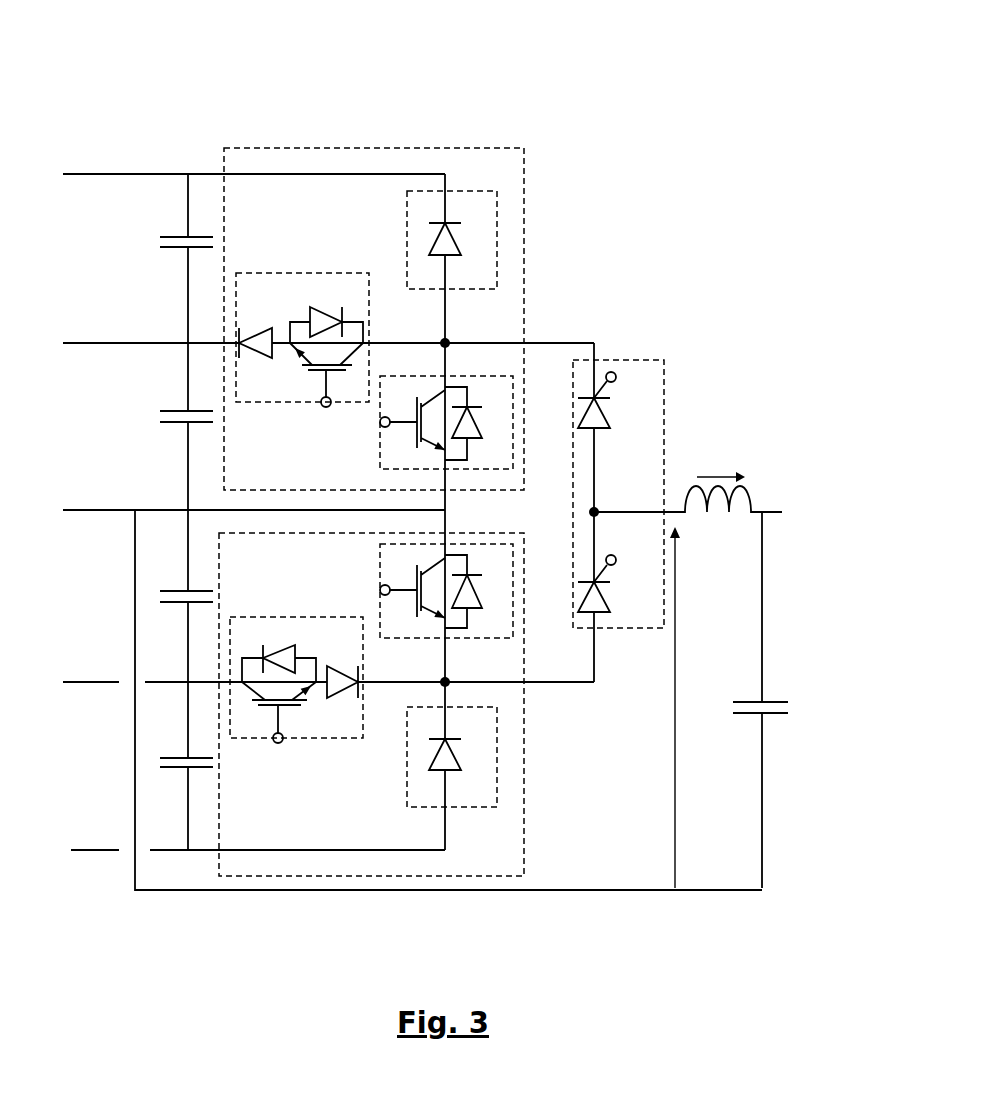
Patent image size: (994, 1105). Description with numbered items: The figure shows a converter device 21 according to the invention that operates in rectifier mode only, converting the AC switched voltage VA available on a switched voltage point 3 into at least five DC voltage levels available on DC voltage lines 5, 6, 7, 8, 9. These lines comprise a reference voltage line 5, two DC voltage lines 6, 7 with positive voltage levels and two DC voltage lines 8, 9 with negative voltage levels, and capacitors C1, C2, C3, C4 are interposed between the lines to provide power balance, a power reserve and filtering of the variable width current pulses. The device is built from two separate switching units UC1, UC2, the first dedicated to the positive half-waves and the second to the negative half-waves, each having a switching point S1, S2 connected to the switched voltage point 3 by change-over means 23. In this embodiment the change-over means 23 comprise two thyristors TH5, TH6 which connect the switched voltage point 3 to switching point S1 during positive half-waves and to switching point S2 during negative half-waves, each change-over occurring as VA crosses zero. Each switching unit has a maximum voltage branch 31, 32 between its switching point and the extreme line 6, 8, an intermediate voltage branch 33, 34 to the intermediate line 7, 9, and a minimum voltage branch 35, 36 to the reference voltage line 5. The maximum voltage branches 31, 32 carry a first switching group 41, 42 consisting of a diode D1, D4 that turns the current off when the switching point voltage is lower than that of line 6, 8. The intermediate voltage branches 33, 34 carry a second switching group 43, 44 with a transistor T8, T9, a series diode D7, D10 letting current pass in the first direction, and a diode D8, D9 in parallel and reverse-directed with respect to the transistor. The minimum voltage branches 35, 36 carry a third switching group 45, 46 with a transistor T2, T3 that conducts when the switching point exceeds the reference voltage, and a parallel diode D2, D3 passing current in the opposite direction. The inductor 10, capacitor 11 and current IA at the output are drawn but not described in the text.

The switched voltage point 3 is at (594, 512).
The reference voltage line 5 is at (118, 510).
The DC voltage line having positive voltage level 6 is at (108, 175).
The DC voltage line having positive voltage level 7 is at (127, 343).
The DC voltage line having negative voltage level 8 is at (95, 850).
The DC voltage line having negative voltage level 9 is at (95, 682).
The load inductor 10 is at (747, 498).
The load capacitor 11 is at (770, 702).
The converter device 21 is at (696, 116).
The change-over means 23 is at (665, 458).
The maximum voltage branch 31 is at (340, 174).
The maximum voltage branch 32 is at (390, 850).
The intermediate voltage branch 33 is at (309, 216).
The intermediate voltage branch 34 is at (317, 792).
The minimum voltage branch 35 is at (445, 500).
The minimum voltage branch 36 is at (440, 522).
The first switching group 41 is at (513, 182).
The first switching group 42 is at (492, 837).
The second switching group 43 is at (268, 272).
The second switching group 44 is at (307, 738).
The third switching group 45 is at (530, 367).
The third switching group 46 is at (590, 679).
The capacitor C1 is at (172, 243).
The capacitor C2 is at (172, 416).
The capacitor C3 is at (183, 586).
The capacitor C4 is at (183, 748).
The diode D1 is at (457, 239).
The diode D2 is at (477, 423).
The diode D3 is at (477, 591).
The diode D4 is at (457, 754).
The diode D7 is at (255, 333).
The diode D8 is at (326, 315).
The diode D9 is at (279, 652).
The diode D10 is at (340, 669).
The transistor T2 is at (412, 420).
The transistor T3 is at (412, 588).
The transistor T8 is at (326, 375).
The transistor T9 is at (277, 712).
The thyristor TH5 is at (619, 400).
The thyristor TH6 is at (619, 583).
The switching unit UC1 is at (412, 147).
The switching unit UC2 is at (466, 877).
The switching point S1 is at (444, 343).
The switching point S2 is at (444, 681).
The output current IA is at (721, 466).
The switched voltage VA is at (689, 707).